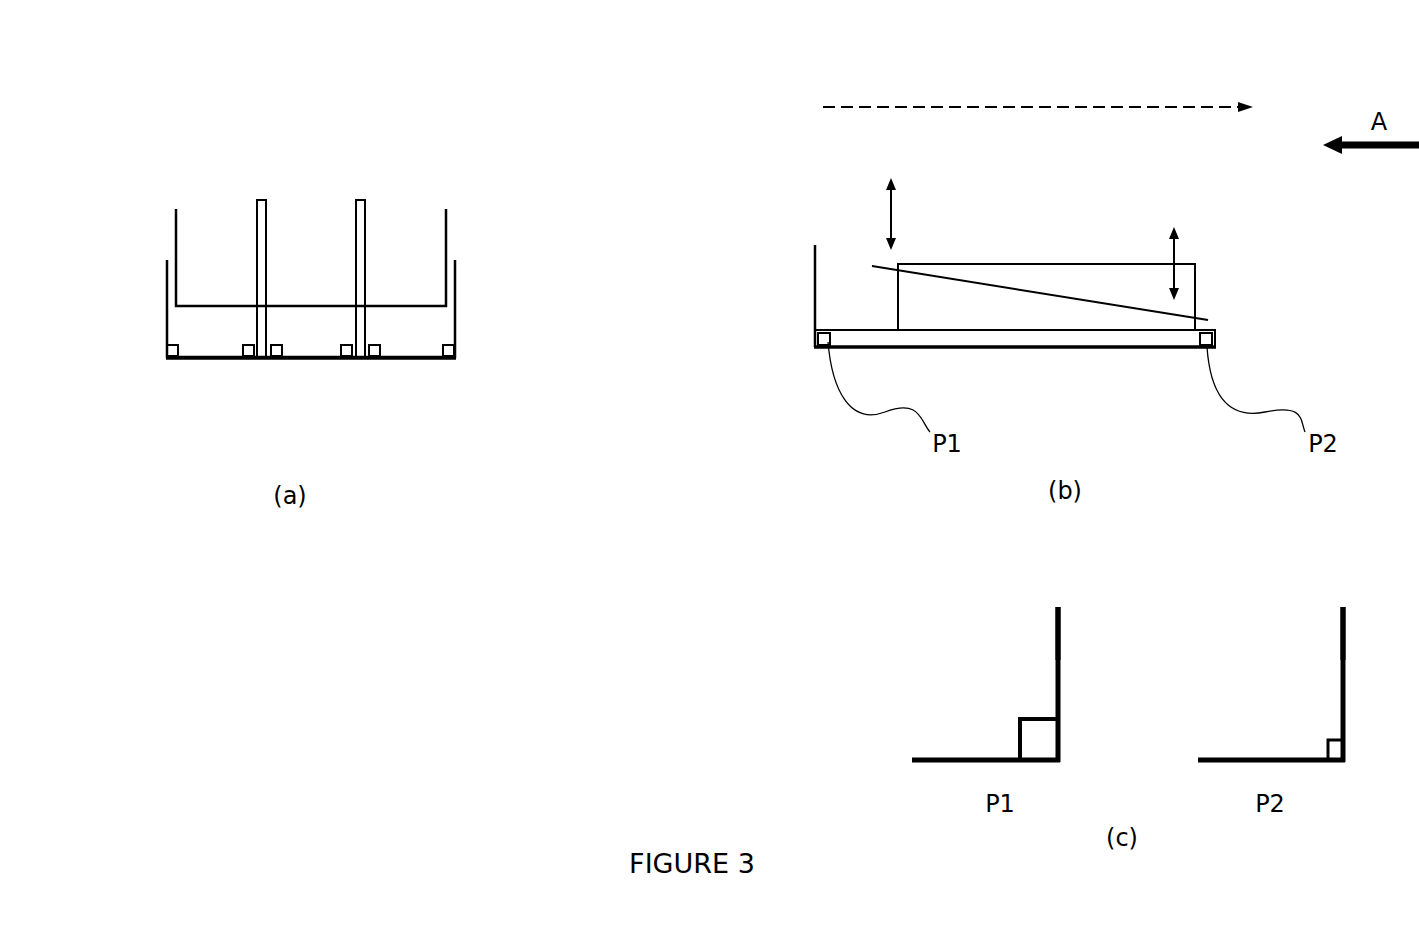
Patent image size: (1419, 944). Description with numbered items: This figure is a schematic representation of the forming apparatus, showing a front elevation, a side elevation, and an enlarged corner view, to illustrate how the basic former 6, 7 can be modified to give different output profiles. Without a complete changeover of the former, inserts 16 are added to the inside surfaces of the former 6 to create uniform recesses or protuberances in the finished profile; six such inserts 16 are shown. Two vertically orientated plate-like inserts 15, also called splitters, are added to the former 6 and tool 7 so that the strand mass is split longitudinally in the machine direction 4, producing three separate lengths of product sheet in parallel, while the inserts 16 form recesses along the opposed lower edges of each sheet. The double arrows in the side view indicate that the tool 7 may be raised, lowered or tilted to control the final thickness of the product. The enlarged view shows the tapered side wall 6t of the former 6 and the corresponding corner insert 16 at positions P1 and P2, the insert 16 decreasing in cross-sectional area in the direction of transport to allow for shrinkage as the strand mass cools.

The machine direction 4 is at (964, 105).
The former 6 is at (165, 292).
The tapered side wall 6t is at (1057, 650).
The tool 7 is at (446, 232).
The plate-like inserts 15 is at (263, 196).
The inserts 16 is at (376, 358).